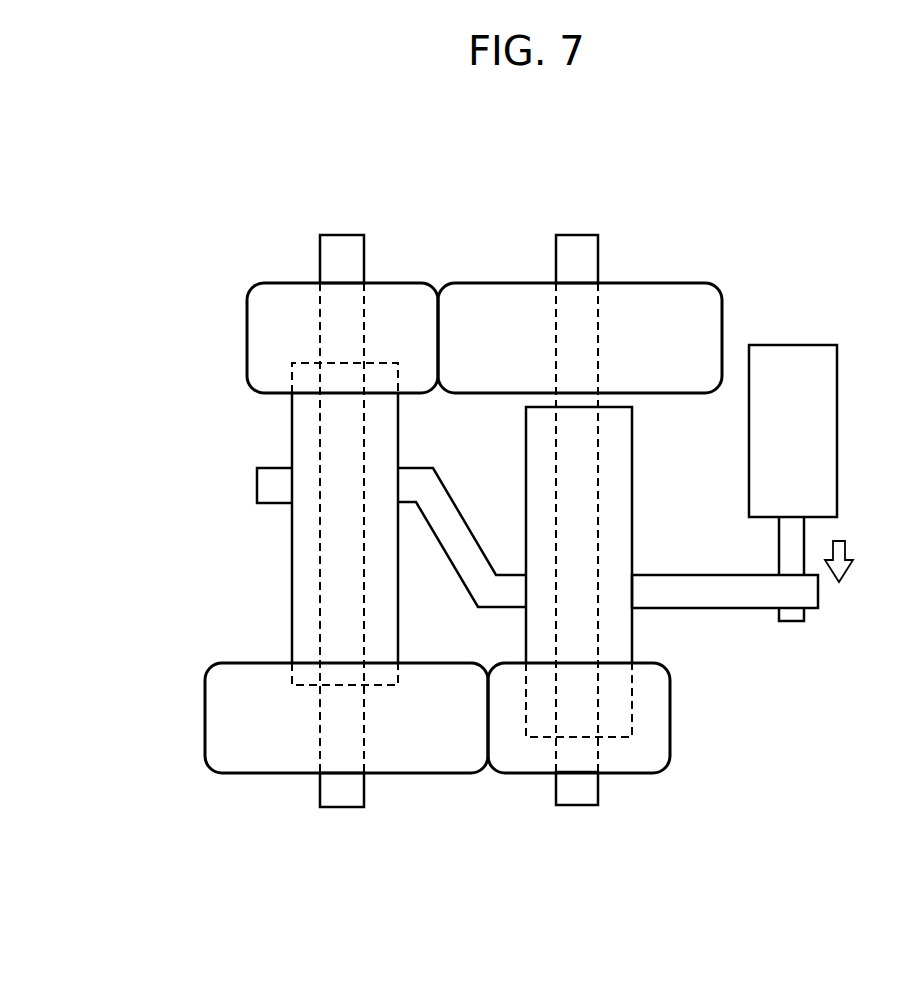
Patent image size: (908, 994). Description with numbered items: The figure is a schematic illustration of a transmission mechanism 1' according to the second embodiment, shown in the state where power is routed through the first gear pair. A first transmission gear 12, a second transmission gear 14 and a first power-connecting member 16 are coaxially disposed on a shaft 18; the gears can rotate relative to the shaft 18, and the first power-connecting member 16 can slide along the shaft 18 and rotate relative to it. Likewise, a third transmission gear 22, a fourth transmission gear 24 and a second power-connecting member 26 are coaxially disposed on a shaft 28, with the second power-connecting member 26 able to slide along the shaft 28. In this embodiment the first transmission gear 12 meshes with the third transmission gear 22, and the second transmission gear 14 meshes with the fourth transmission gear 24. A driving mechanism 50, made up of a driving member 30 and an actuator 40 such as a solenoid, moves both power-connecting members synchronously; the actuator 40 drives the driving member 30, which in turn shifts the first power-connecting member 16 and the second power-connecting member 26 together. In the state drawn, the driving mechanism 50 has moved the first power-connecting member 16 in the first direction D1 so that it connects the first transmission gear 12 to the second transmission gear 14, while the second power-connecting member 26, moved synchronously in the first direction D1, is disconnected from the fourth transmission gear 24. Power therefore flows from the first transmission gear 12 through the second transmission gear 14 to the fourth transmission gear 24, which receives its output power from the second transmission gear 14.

The transmission mechanism 1' is at (844, 170).
The first transmission gear 12 is at (460, 765).
The second transmission gear 14 is at (410, 288).
The first power-connecting member 16 is at (399, 632).
The shaft 18 is at (352, 800).
The third transmission gear 22 is at (650, 765).
The fourth transmission gear 24 is at (670, 295).
The second power-connecting member 26 is at (633, 488).
The shaft 28 is at (572, 792).
The driving member 30 is at (722, 600).
The actuator 40 is at (838, 421).
The driving mechanism 50 is at (145, 165).
The first direction D1 is at (862, 561).